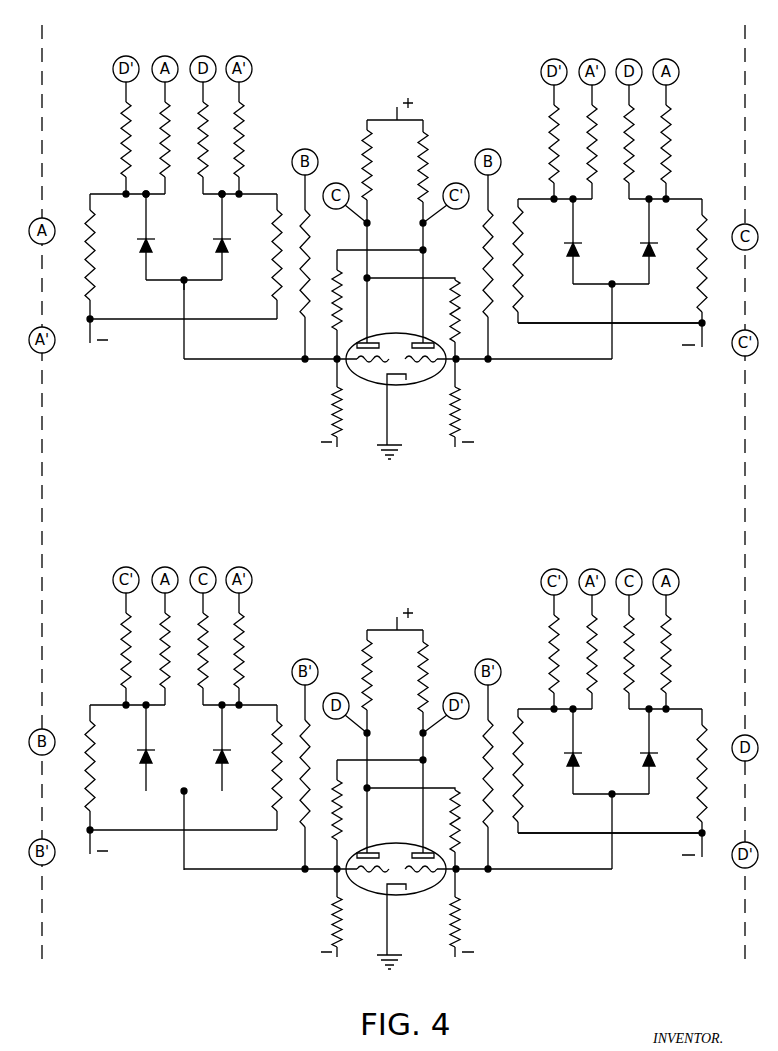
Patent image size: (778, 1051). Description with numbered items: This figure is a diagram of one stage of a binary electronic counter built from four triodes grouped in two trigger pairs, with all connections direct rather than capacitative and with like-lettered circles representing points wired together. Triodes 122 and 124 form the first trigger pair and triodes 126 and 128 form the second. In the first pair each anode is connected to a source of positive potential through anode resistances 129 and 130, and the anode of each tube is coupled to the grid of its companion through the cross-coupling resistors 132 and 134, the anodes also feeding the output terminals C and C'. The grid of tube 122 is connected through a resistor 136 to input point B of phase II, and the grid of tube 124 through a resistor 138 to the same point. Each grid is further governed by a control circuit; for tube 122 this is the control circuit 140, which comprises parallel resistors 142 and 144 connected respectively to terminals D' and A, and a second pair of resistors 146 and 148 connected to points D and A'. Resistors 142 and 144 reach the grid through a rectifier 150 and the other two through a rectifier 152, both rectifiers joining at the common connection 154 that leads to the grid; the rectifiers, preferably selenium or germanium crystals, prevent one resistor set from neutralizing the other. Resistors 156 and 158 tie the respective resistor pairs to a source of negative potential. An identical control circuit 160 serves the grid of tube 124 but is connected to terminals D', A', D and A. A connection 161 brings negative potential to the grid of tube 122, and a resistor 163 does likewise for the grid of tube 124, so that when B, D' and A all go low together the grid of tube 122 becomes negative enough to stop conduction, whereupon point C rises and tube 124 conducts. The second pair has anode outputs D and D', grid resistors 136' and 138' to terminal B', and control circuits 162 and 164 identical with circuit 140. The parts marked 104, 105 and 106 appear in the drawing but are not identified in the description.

The rectifier bridge 104 is at (208, 268).
The junction point 105 is at (143, 200).
The junction point 106 is at (224, 200).
The triode 122 is at (372, 365).
The triode 124 is at (423, 365).
The triode 126 is at (372, 875).
The triode 128 is at (423, 875).
The anode resistance 129 is at (370, 198).
The anode resistance 130 is at (420, 150).
The cross-coupling resistor 132 is at (342, 285).
The cross-coupling resistor 134 is at (460, 290).
The grid resistor 136 is at (326, 263).
The grid resistor 138 is at (506, 249).
The grid resistor 136' is at (327, 773).
The grid resistor 138' is at (462, 773).
The control circuit 140 is at (153, 341).
The resistor 142 is at (122, 112).
The resistor 144 is at (158, 110).
The resistor 146 is at (199, 110).
The resistor 148 is at (244, 113).
The rectifier 150 is at (143, 249).
The rectifier 152 is at (223, 250).
The common connection 154 is at (182, 286).
The resistor 156 is at (97, 293).
The resistor 158 is at (270, 290).
The control circuit 160 is at (628, 341).
The connection 161 is at (332, 387).
The control circuit 162 is at (156, 852).
The resistor 163 is at (464, 417).
The control circuit 164 is at (637, 852).